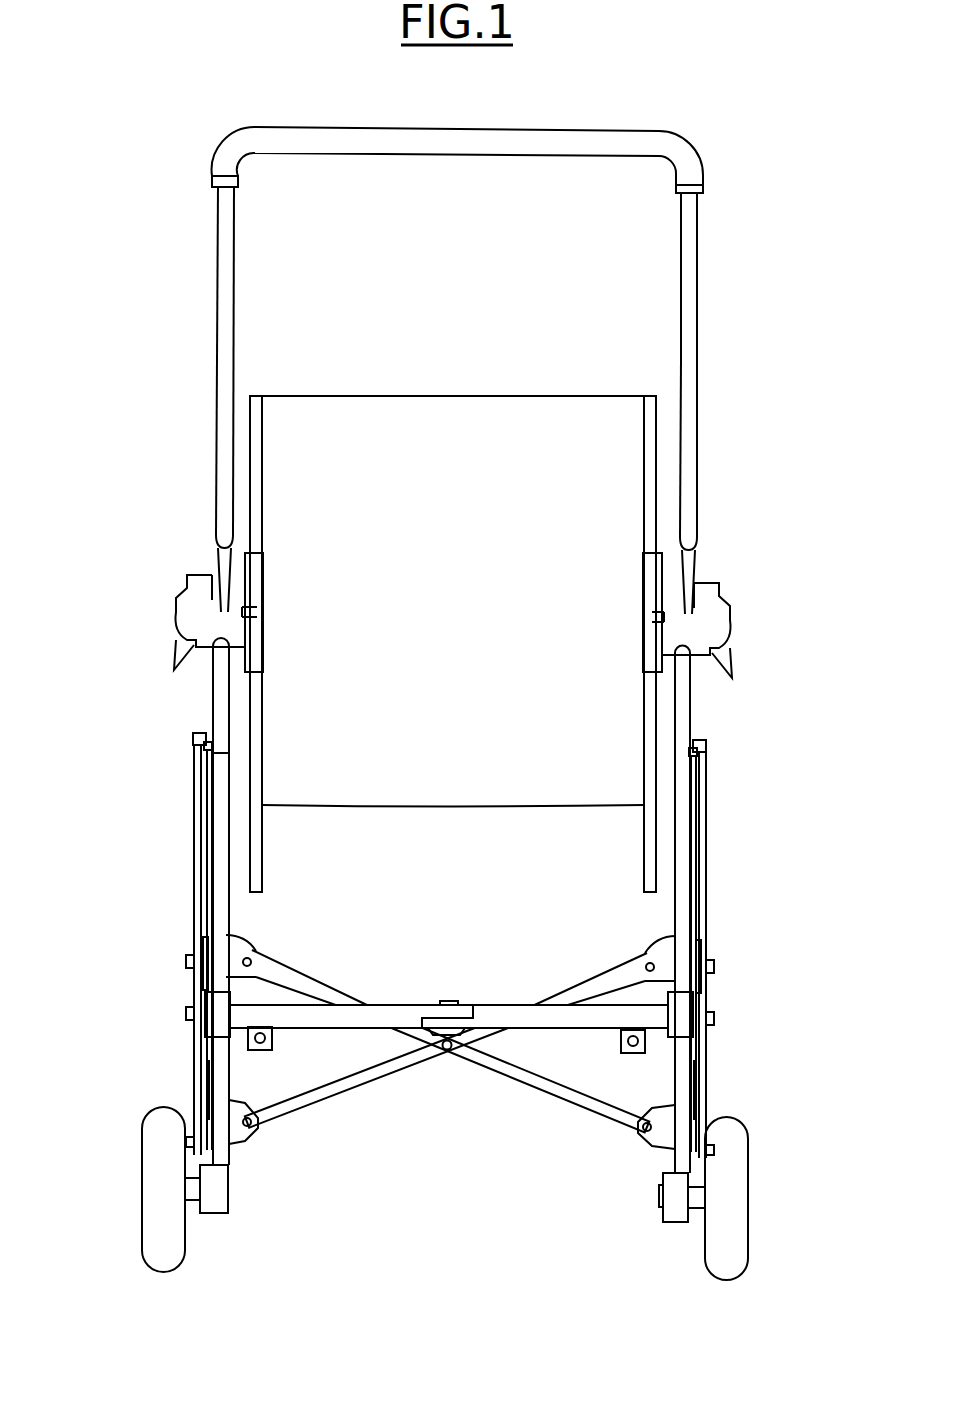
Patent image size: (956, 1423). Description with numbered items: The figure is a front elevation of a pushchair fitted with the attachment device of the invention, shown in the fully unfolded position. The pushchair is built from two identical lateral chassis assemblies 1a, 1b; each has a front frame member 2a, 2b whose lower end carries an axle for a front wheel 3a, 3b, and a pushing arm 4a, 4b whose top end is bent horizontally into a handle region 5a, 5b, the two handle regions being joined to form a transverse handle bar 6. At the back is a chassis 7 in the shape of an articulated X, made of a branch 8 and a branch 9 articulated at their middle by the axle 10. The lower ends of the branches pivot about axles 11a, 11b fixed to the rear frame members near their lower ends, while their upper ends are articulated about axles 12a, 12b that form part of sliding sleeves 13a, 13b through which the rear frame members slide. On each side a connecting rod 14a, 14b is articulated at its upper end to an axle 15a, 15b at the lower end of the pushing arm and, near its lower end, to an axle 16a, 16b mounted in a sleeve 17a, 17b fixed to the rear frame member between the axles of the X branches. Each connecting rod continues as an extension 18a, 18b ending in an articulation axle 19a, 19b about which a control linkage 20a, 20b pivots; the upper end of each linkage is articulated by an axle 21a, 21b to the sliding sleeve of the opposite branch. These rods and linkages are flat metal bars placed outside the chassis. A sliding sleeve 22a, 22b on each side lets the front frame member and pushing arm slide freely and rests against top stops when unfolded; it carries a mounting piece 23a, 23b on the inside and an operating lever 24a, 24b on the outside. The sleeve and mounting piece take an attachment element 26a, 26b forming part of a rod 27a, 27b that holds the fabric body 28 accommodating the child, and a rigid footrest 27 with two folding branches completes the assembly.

The lateral chassis assembly 1a is at (157, 396).
The lateral chassis assembly 1b is at (752, 400).
The front frame member 2a is at (222, 705).
The front frame member 2b is at (685, 707).
The front wheel 3a is at (162, 1197).
The front wheel 3b is at (730, 1205).
The pushing arm 4a is at (225, 220).
The pushing arm 4b is at (688, 222).
The handle region 5a is at (232, 163).
The handle region 5b is at (683, 168).
The transverse handle bar 6 is at (602, 128).
The X-shaped rear chassis 7 is at (447, 1127).
The branch 8 is at (345, 1088).
The branch 9 is at (563, 1093).
The axle 10 is at (447, 1052).
The axle 11a is at (258, 1130).
The axle 11b is at (640, 1133).
The axle 12a is at (253, 945).
The axle 12b is at (648, 948).
The sliding sleeve 13a is at (235, 955).
The sliding sleeve 13b is at (665, 957).
The connecting rod 14a is at (197, 808).
The connecting rod 14b is at (707, 805).
The axle 15a is at (207, 742).
The axle 15b is at (701, 750).
The axle 16a is at (186, 1013).
The axle 16b is at (714, 1018).
The sleeve 17a is at (213, 1027).
The sleeve 17b is at (680, 1030).
The extension 18a is at (192, 1073).
The extension 18b is at (703, 1080).
The articulation axle 19a is at (188, 1141).
The articulation axle 19b is at (710, 1150).
The control linkage 20a is at (202, 1093).
The control linkage 20b is at (700, 1095).
The axle 21a is at (186, 962).
The axle 21b is at (714, 967).
The sliding sleeve 22a is at (160, 608).
The sliding sleeve 22b is at (747, 614).
The mounting piece 23a is at (240, 628).
The mounting piece 23b is at (668, 632).
The operating lever 24a is at (177, 643).
The operating lever 24b is at (733, 655).
The attachment element 26a is at (253, 660).
The attachment element 26b is at (653, 665).
The rigid footrest 27 is at (431, 999).
The rod 27a is at (252, 838).
The rod 27b is at (653, 848).
The body 28 is at (452, 598).